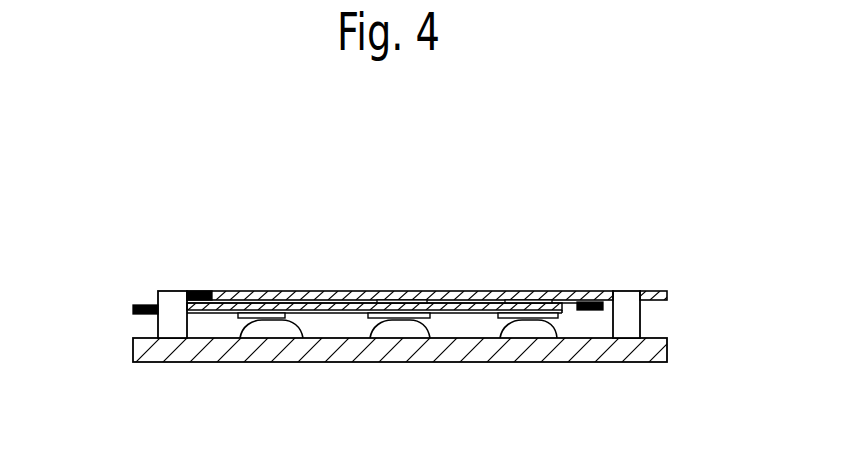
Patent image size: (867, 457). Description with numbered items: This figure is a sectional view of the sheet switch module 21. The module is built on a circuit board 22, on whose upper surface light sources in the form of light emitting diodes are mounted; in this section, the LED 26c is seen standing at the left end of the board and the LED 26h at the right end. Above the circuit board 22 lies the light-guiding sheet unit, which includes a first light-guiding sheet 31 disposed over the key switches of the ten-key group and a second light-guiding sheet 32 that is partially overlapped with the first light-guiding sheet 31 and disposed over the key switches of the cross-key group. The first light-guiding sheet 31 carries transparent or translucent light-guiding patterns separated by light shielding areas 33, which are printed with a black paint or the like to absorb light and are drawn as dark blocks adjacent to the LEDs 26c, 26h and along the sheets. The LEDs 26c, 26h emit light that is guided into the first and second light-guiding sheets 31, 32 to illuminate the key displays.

The sheet switch module 21 is at (575, 231).
The circuit board 22 is at (667, 345).
The light emitting diode 26c is at (170, 292).
The light emitting diode 26h is at (627, 292).
The first light-guiding sheet 31 is at (465, 306).
The second light-guiding sheet 32 is at (441, 291).
The light shielding area 33 is at (197, 291).